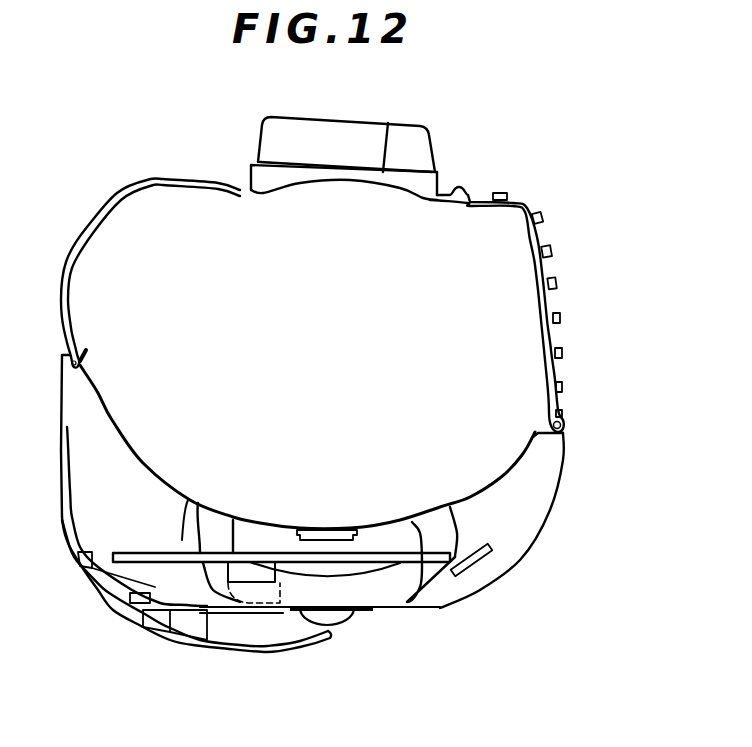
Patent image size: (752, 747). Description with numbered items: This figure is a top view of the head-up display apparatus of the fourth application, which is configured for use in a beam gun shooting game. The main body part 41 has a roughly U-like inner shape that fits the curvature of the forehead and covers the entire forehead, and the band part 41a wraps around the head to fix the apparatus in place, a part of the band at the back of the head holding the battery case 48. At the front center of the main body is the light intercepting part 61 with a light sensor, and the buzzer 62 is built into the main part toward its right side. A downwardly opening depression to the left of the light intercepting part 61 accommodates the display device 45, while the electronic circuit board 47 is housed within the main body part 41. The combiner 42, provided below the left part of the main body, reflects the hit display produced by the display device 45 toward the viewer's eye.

The main body part 41 is at (140, 483).
The band part 41a is at (553, 302).
The combiner 42 is at (288, 650).
The display device 45 is at (253, 573).
The electronic circuit board 47 is at (188, 500).
The battery case 48 is at (347, 157).
The light intercepting part 61 is at (350, 611).
The buzzer 62 is at (478, 567).